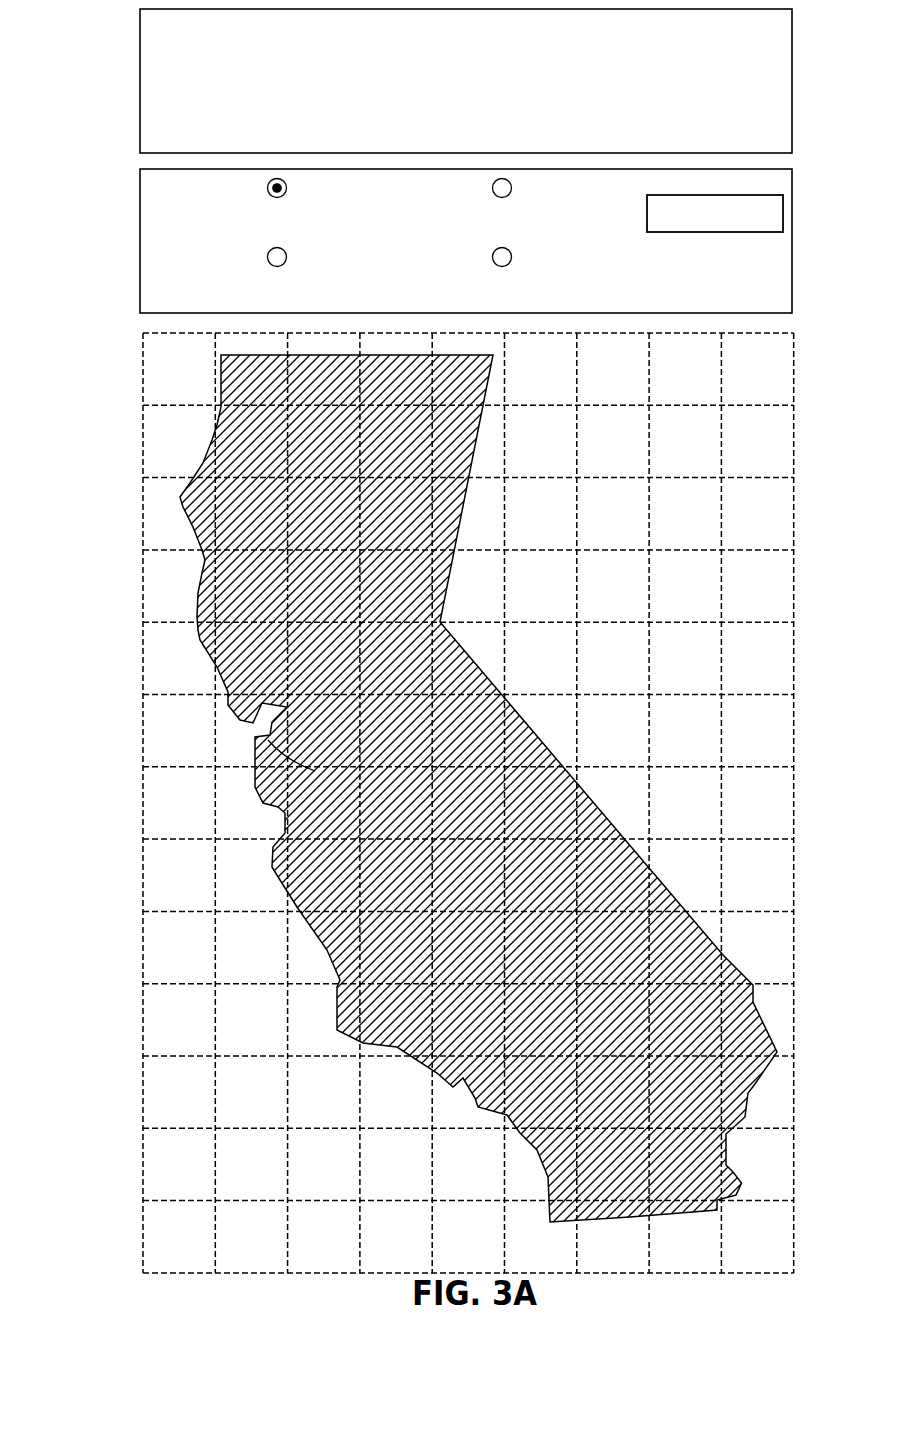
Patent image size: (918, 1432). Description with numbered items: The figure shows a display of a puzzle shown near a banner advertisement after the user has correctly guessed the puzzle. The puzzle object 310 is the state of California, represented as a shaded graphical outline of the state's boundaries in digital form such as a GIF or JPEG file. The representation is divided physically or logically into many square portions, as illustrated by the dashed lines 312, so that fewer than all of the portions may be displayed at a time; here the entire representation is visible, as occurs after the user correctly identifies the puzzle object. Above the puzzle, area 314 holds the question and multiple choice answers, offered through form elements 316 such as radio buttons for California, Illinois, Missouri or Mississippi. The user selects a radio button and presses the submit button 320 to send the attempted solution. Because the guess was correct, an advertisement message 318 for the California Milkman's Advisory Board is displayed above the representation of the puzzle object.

The puzzle object 310 is at (368, 634).
The dashed lines 312 is at (142, 505).
The area 314 is at (465, 241).
The form elements 316 is at (496, 196).
The banner or button advertisement 318 is at (138, 100).
The submit button 320 is at (783, 202).